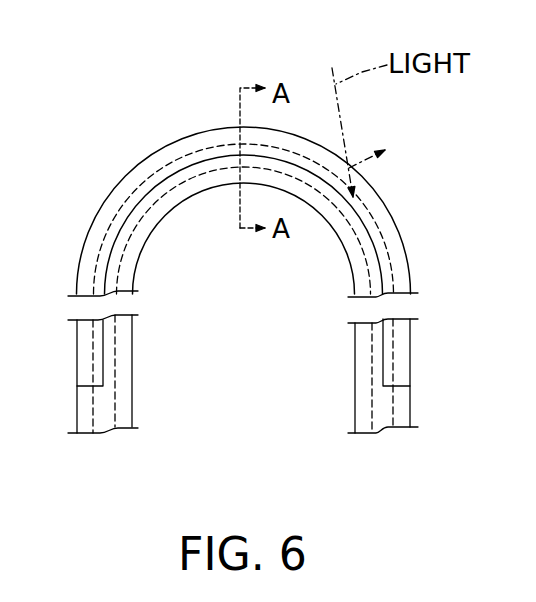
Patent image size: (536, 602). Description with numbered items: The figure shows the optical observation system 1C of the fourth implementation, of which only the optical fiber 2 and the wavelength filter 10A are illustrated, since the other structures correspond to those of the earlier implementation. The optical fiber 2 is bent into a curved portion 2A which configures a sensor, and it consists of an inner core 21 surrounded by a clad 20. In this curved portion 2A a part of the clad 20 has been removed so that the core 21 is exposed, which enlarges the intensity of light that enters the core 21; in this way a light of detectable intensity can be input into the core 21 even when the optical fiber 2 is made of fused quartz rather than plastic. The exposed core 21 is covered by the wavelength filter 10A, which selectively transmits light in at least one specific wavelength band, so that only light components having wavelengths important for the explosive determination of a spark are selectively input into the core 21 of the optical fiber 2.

The optical observation system 1C is at (157, 102).
The wavelength filter 10A is at (386, 236).
The optical fiber 2 is at (253, 292).
The clad 20 is at (147, 234).
The core 21 is at (193, 178).
The curved portion 2A is at (343, 246).